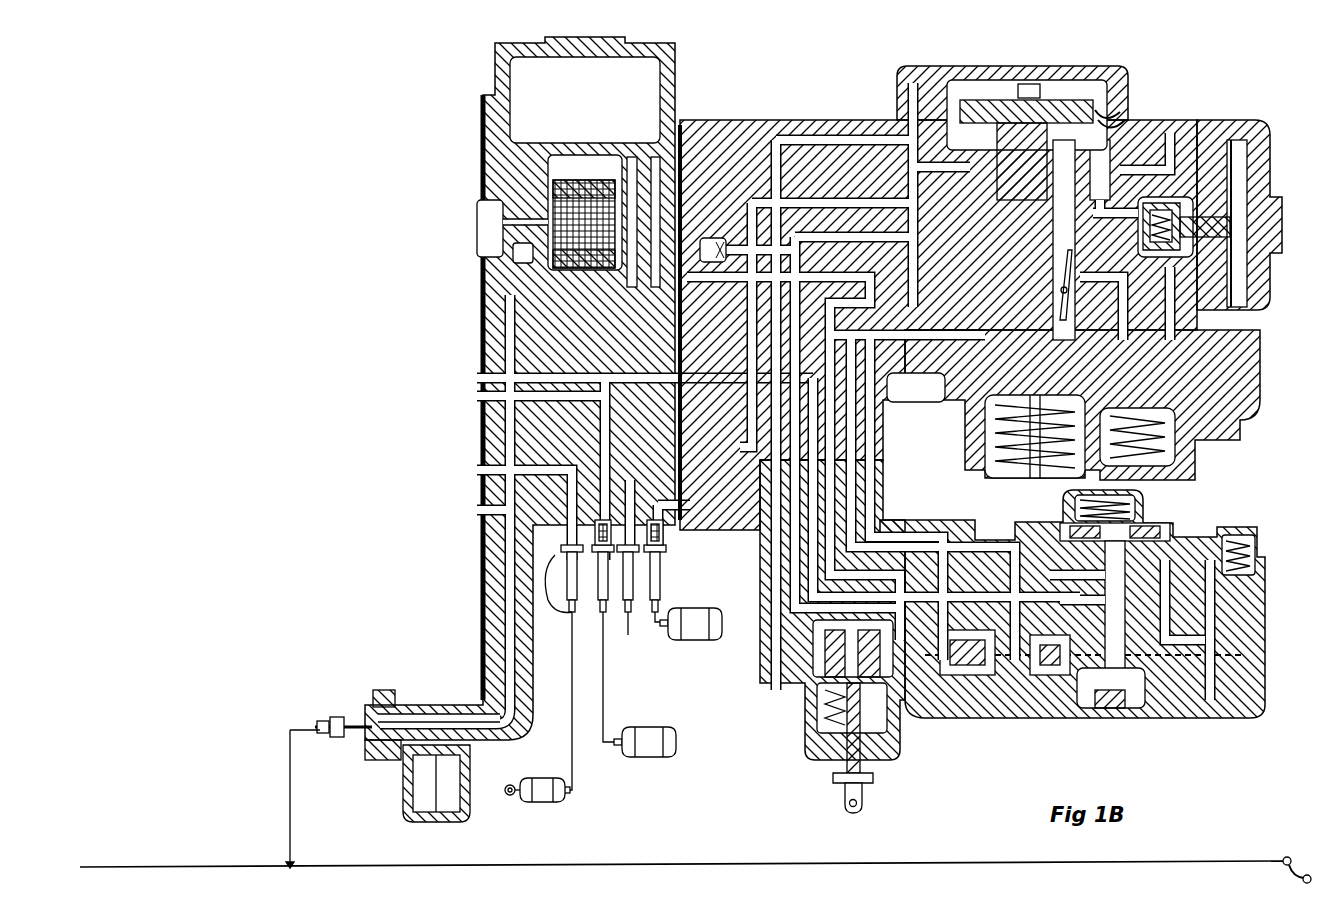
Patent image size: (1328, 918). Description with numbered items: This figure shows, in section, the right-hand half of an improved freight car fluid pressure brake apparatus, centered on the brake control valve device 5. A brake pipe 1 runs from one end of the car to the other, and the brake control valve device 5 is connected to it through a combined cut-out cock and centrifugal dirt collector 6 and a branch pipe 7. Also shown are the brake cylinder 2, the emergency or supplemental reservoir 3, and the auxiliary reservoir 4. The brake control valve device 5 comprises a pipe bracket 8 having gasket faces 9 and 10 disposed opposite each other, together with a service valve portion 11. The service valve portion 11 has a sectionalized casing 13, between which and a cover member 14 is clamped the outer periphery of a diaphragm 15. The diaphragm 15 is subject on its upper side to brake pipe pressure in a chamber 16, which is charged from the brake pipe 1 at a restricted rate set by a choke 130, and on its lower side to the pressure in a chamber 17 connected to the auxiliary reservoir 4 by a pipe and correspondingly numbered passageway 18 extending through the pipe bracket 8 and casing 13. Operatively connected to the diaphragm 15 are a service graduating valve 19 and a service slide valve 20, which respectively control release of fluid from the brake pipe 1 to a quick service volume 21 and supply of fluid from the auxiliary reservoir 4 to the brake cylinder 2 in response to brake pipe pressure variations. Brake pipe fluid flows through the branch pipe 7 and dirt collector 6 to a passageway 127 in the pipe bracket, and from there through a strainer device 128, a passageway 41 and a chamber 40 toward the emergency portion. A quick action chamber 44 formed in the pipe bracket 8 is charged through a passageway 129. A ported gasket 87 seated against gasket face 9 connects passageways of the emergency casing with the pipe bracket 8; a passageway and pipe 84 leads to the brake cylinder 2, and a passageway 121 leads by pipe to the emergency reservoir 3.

The brake pipe 1 is at (375, 863).
The brake cylinder 2 is at (545, 802).
The emergency or supplemental reservoir 3 is at (639, 724).
The auxiliary reservoir 4 is at (692, 604).
The brake control valve device 5 is at (591, 26).
The combined cut-out cock and centrifugal dirt collector 6 is at (443, 702).
The branch pipe 7 is at (292, 805).
The pipe bracket 8 is at (601, 42).
The gasket face 9 is at (484, 100).
The gasket face 10 is at (683, 129).
The service valve device or portion 11 is at (1161, 111).
The sectionalized casing 13 is at (740, 128).
The cover member 14 is at (922, 76).
The diaphragm 15 is at (1104, 112).
The chamber 16 is at (1073, 90).
The chamber 17 is at (1120, 126).
The pipe and passageway 18 is at (828, 128).
The service graduating valve 19 is at (1030, 224).
The service slide valve 20 is at (985, 382).
The quick service volume 21 is at (897, 402).
The chamber 40 is at (491, 205).
The passageway 41 is at (526, 225).
The quick action chamber 44 is at (642, 92).
The passageway and pipe 84 is at (553, 584).
The ported gasket 87 is at (483, 608).
The passageway 121 is at (578, 380).
The passageway 127 is at (512, 299).
The strainer device 128 is at (600, 186).
The passageway 129 is at (498, 130).
The choke 130 is at (727, 240).